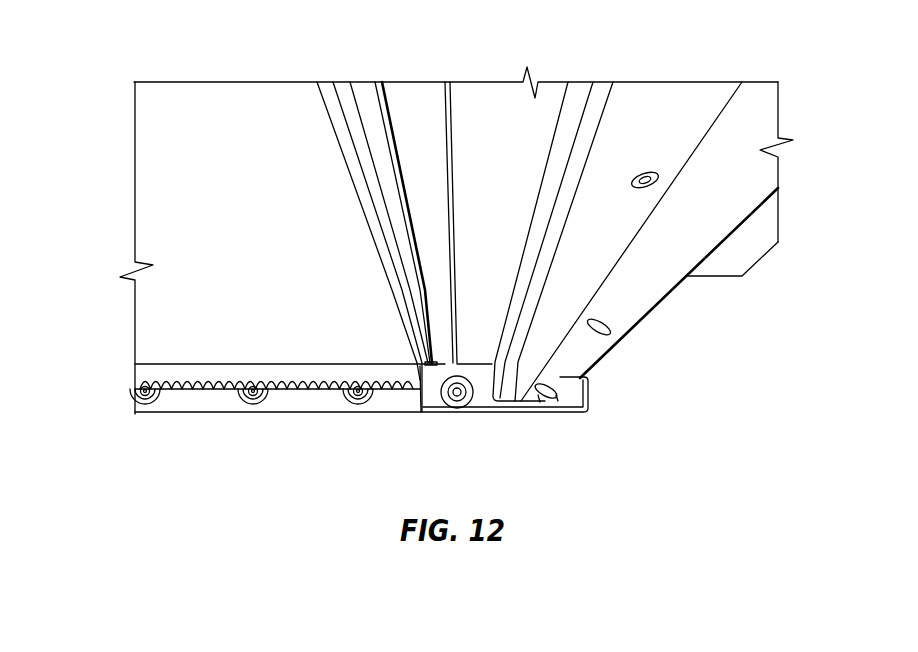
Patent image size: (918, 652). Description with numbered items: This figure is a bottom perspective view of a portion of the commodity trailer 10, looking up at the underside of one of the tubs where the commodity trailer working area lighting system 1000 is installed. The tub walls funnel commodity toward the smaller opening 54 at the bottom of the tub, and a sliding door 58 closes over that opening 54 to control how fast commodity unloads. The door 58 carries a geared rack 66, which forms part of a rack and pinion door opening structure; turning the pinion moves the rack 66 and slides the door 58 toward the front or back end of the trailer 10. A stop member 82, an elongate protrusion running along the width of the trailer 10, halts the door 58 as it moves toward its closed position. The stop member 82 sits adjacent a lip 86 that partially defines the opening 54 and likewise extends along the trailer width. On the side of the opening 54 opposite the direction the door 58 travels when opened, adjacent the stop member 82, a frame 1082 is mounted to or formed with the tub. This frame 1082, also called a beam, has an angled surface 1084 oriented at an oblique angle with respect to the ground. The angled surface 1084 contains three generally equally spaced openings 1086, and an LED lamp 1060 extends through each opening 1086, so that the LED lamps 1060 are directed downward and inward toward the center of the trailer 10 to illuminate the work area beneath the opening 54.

The commodity trailer 10 is at (208, 455).
The opening 54 is at (373, 116).
The door 58 is at (185, 300).
The geared rack 66 is at (312, 389).
The stop member 82 is at (512, 393).
The lip 86 is at (400, 181).
The commodity trailer working area lighting system 1000 is at (641, 337).
The LED lamp 1060 is at (537, 401).
The frame 1082 is at (668, 256).
The angled surface 1084 is at (707, 228).
The opening 1086 is at (600, 336).